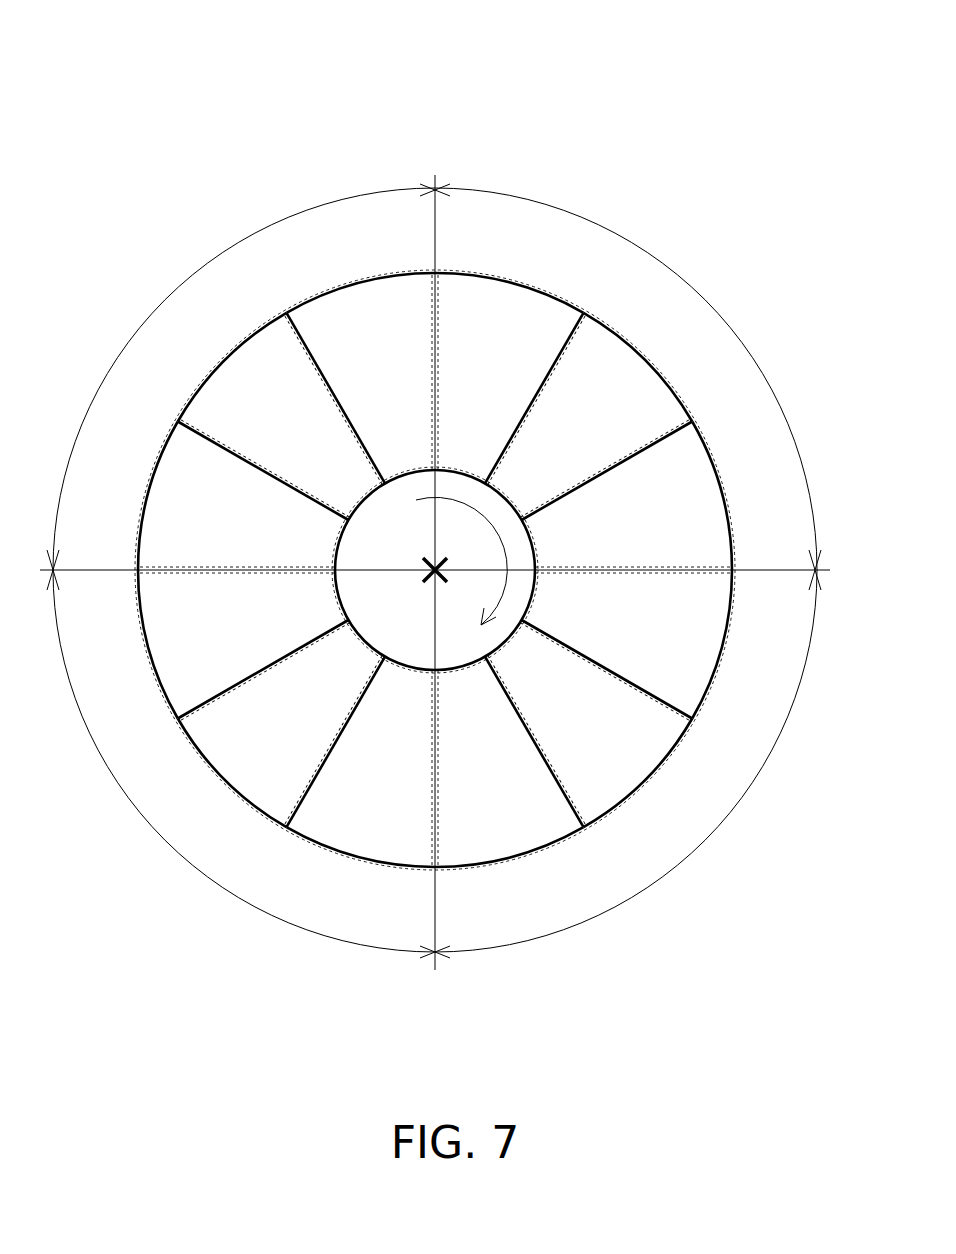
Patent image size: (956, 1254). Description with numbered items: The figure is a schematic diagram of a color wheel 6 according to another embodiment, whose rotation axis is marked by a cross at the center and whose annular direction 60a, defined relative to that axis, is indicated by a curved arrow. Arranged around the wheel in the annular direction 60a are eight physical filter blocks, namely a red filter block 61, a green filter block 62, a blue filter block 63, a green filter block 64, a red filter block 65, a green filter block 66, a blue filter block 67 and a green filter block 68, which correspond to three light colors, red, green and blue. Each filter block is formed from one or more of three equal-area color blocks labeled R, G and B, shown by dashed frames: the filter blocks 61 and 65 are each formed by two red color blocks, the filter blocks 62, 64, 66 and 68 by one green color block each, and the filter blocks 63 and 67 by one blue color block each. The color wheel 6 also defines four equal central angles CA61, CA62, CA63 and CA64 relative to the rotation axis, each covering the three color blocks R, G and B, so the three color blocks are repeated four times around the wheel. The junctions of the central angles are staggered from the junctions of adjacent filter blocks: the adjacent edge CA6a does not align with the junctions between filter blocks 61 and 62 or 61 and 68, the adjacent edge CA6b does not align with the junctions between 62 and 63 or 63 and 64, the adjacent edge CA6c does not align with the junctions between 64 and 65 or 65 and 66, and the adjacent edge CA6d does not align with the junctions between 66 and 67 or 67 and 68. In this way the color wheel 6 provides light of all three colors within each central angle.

The color wheel 6 is at (696, 100).
The annular direction 60a is at (461, 575).
The red filter block 61 is at (284, 309).
The green filter block 62 is at (696, 420).
The blue filter block 63 is at (696, 420).
The green filter block 64 is at (696, 720).
The red filter block 65 is at (284, 831).
The green filter block 66 is at (174, 720).
The blue filter block 67 is at (174, 420).
The green filter block 68 is at (174, 420).
The central angle CA61 is at (749, 276).
The central angle CA62 is at (765, 856).
The central angle CA63 is at (125, 863).
The central angle CA64 is at (110, 288).
The adjacent edge CA6a is at (425, 316).
The adjacent edge CA6b is at (696, 572).
The adjacent edge CA6c is at (425, 826).
The adjacent edge CA6d is at (176, 572).